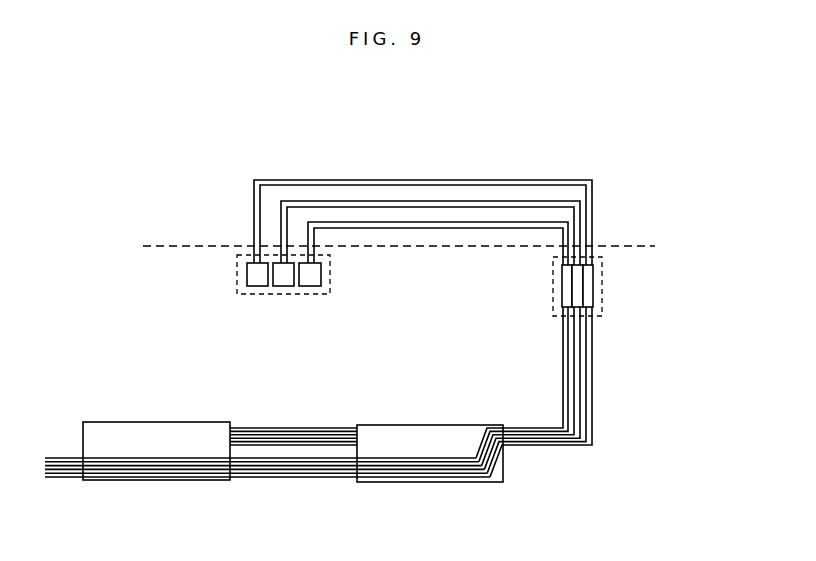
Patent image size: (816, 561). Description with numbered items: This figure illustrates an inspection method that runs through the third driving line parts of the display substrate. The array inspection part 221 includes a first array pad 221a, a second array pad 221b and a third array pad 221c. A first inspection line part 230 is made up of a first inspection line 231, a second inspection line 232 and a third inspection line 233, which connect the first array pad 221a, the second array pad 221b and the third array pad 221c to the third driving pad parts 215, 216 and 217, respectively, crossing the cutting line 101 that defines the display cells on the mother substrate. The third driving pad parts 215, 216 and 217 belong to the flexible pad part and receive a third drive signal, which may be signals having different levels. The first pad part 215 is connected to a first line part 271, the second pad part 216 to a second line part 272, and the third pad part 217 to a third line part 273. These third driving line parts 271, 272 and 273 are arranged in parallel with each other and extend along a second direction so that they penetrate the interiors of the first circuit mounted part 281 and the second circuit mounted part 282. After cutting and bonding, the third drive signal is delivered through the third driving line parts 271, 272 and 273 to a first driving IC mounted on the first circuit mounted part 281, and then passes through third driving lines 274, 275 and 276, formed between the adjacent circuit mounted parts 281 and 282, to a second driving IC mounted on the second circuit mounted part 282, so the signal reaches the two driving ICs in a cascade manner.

The cutting line 101 is at (655, 246).
The first pad part 215 is at (593, 280).
The second pad part 216 is at (577, 300).
The third pad part 217 is at (562, 281).
The array inspection part 221 is at (299, 297).
The first array pad 221a is at (258, 289).
The second array pad 221b is at (283, 289).
The third array pad 221c is at (310, 289).
The first inspection line part 230 is at (423, 185).
The first inspection line 231 is at (507, 181).
The second inspection line 232 is at (467, 203).
The third inspection line 233 is at (527, 137).
The first line part 271 is at (592, 352).
The second line part 272 is at (580, 385).
The third line part 273 is at (565, 413).
The third driving line 274 is at (337, 442).
The third driving line 275 is at (292, 436).
The third driving line 276 is at (245, 430).
The first circuit mounted part 281 is at (445, 484).
The second circuit mounted part 282 is at (182, 482).